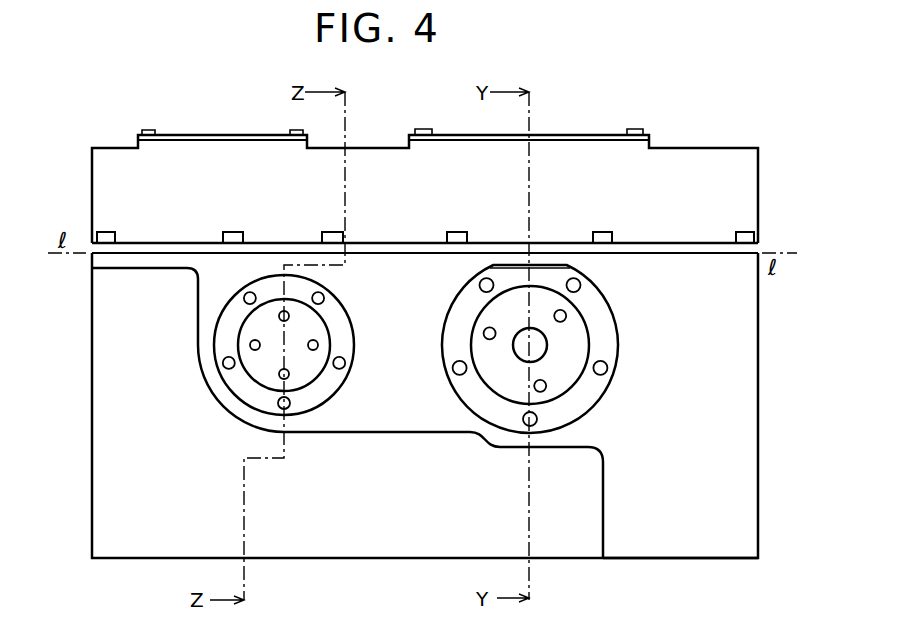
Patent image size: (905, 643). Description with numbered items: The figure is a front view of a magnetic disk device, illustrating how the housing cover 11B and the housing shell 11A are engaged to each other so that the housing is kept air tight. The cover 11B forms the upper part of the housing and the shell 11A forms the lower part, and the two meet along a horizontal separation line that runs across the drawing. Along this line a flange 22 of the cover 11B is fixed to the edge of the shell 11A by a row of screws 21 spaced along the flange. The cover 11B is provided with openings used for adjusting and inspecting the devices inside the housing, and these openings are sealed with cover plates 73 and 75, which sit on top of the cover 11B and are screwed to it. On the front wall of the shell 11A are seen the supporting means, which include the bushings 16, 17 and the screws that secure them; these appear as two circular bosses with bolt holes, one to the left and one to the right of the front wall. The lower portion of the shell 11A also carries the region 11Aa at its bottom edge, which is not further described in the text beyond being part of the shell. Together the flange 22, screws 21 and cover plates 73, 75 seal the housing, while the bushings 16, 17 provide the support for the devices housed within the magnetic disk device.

The housing cover 11B is at (122, 147).
The housing shell 11A is at (760, 538).
The bottom surface of lower casing 11Aa is at (652, 540).
The screws 21 is at (108, 232).
The flange 22 is at (665, 243).
The cover plate 73 is at (597, 135).
The cover plate 75 is at (233, 135).
The bushing 16 is at (566, 376).
The bushing 17 is at (228, 333).